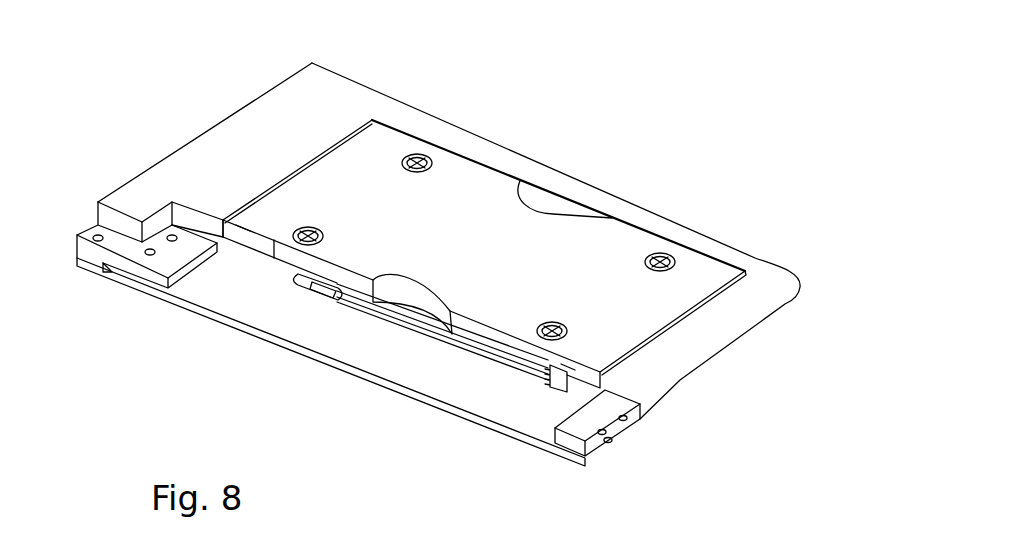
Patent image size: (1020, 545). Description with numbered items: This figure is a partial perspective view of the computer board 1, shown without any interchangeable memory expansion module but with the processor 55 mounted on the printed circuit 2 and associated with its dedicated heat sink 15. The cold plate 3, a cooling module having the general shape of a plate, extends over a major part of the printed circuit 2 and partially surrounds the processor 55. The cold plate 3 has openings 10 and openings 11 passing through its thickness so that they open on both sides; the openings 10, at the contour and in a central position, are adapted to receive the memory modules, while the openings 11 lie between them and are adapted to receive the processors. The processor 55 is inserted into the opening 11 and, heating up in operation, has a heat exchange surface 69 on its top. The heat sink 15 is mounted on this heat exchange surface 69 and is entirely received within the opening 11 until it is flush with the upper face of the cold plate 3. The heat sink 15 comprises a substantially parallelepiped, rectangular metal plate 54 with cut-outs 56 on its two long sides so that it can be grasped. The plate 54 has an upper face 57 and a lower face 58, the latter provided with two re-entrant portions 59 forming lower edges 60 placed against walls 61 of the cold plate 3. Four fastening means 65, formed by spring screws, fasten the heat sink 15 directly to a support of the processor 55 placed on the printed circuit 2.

The computer board 1 is at (206, 90).
The printed circuit 2 is at (323, 351).
The cold plate 3 is at (325, 82).
The openings 10 is at (203, 289).
The openings 11 is at (290, 282).
The heat sink 15 is at (379, 146).
The metal plate 54 is at (461, 170).
The processor 55 is at (410, 332).
The cut-outs 56 is at (548, 206).
The upper face 57 is at (367, 209).
The lower face 58 is at (487, 355).
The re-entrant portions 59 is at (275, 256).
The lower edges 60 is at (250, 258).
The walls 61 is at (243, 224).
The fastening means 65 is at (420, 156).
The heat exchange surface 69 is at (396, 311).